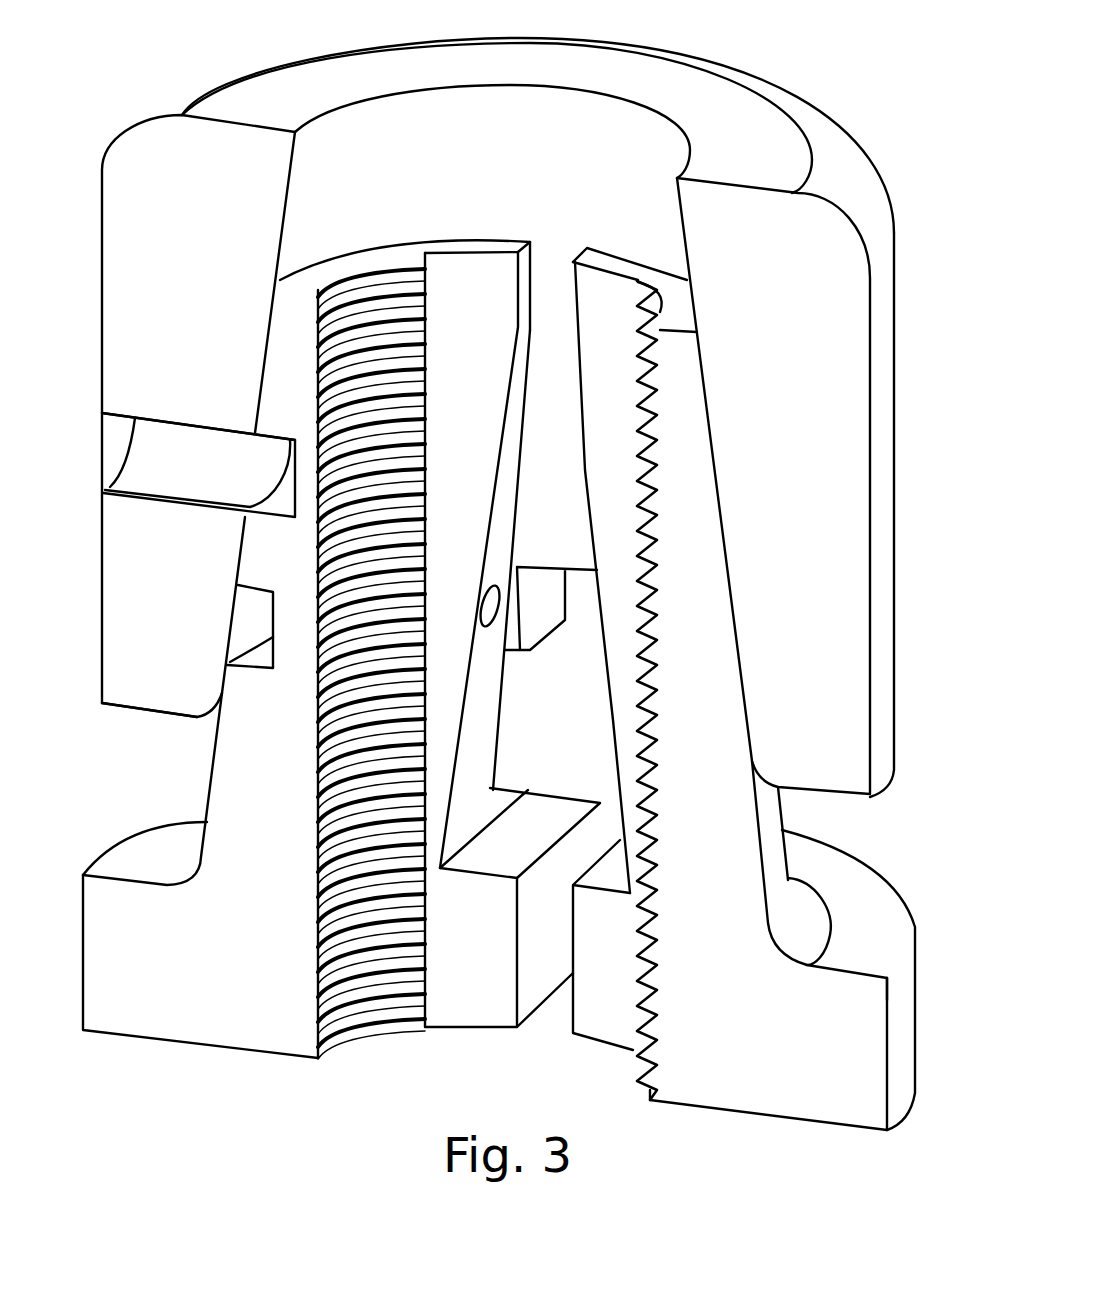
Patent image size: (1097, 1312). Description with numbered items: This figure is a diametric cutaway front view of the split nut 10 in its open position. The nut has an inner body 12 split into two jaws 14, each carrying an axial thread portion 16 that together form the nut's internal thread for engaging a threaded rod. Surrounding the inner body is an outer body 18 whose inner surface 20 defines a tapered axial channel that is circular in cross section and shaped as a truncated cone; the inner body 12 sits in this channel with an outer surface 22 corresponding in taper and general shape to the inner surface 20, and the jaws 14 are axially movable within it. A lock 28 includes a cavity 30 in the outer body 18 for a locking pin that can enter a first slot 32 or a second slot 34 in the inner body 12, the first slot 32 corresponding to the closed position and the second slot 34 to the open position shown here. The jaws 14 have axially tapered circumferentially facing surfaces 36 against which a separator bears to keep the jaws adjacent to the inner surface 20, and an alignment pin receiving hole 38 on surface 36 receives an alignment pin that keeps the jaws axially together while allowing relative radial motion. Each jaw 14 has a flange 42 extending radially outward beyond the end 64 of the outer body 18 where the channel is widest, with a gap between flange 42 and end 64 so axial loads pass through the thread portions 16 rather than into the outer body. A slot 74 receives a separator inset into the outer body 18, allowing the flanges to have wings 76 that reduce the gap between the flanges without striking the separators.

The split nut 10 is at (838, 74).
The inner body 12 is at (242, 1018).
The jaws 14 is at (565, 1003).
The axial thread portion 16 is at (366, 998).
The outer body 18 is at (880, 492).
The inner surface 20 is at (546, 186).
The outer surface 22 is at (765, 843).
The lock 28 is at (205, 466).
The cavity 30 is at (112, 452).
The first slot 32 is at (257, 670).
The second slot 34 is at (292, 438).
The axially tapered circumferentially facing surfaces 36 is at (489, 816).
The alignment pin receiving hole 38 is at (487, 610).
The flange 42 is at (897, 933).
The end of the outer body 64 is at (160, 713).
The slot 74 is at (543, 602).
The wings 76 is at (495, 1003).